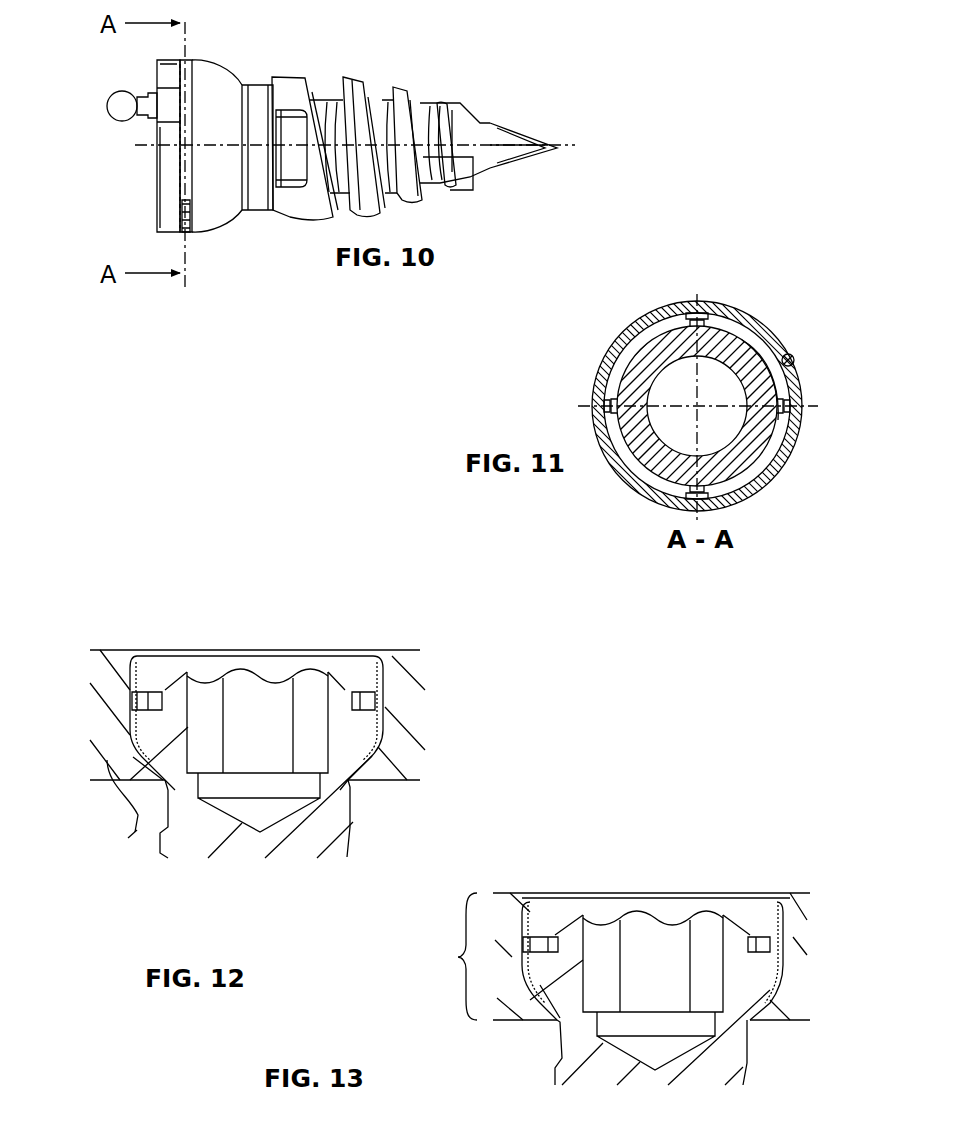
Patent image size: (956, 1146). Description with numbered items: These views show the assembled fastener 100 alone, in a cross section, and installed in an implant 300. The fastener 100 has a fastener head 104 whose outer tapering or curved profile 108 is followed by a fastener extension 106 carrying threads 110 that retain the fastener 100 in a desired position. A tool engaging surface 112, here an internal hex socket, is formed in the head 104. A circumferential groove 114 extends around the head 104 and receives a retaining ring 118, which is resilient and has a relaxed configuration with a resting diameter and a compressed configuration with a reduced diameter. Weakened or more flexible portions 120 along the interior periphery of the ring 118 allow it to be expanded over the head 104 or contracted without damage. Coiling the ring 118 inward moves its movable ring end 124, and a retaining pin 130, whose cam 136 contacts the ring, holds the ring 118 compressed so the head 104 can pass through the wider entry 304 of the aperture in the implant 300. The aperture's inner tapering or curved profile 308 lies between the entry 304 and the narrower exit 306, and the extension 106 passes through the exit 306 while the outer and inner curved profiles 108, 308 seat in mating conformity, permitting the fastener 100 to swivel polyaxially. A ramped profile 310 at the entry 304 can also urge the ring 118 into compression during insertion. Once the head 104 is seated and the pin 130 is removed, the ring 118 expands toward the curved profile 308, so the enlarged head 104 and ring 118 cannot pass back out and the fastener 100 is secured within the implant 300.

In FIG. 10, the fastener 100 is at (484, 204).
In FIG. 11, the fastener 100 is at (622, 288).
In FIG. 12, the fastener 100 is at (200, 866).
In FIG. 13, the fastener 100 is at (536, 1070).
In FIG. 10, the fastener head 104 is at (250, 62).
In FIG. 10, the fastener extension 106 is at (540, 118).
In FIG. 10, the outer tapering or curved profile 108 is at (232, 320).
In FIG. 10, the threads 110 is at (413, 100).
In FIG. 11, the tool engaging surface 112 is at (677, 377).
In FIG. 10, the circumferential groove 114 is at (199, 80).
In FIG. 12, the circumferential groove 114 is at (360, 718).
In FIG. 13, the circumferential groove 114 is at (777, 934).
In FIG. 10, the retaining ring 118 is at (197, 218).
In FIG. 11, the retaining ring 118 is at (613, 332).
In FIG. 12, the retaining ring 118 is at (385, 698).
In FIG. 13, the retaining ring 118 is at (545, 955).
In FIG. 11, the flexible portions 120 is at (597, 377).
In FIG. 11, the movable ring end 124 is at (794, 348).
In FIG. 10, the retaining pin 130 is at (113, 135).
In FIG. 11, the cam 136 is at (765, 425).
In FIG. 12, the implant 300 is at (440, 747).
In FIG. 13, the implant 300 is at (510, 1027).
In FIG. 12, the entry 304 is at (390, 642).
In FIG. 13, the entry 304 is at (585, 888).
In FIG. 12, the exit 306 is at (358, 787).
In FIG. 12, the inner tapering or curved profile 308 is at (111, 845).
In FIG. 13, the inner tapering or curved profile 308 is at (440, 956).
In FIG. 12, the ramped profile 310 is at (135, 652).